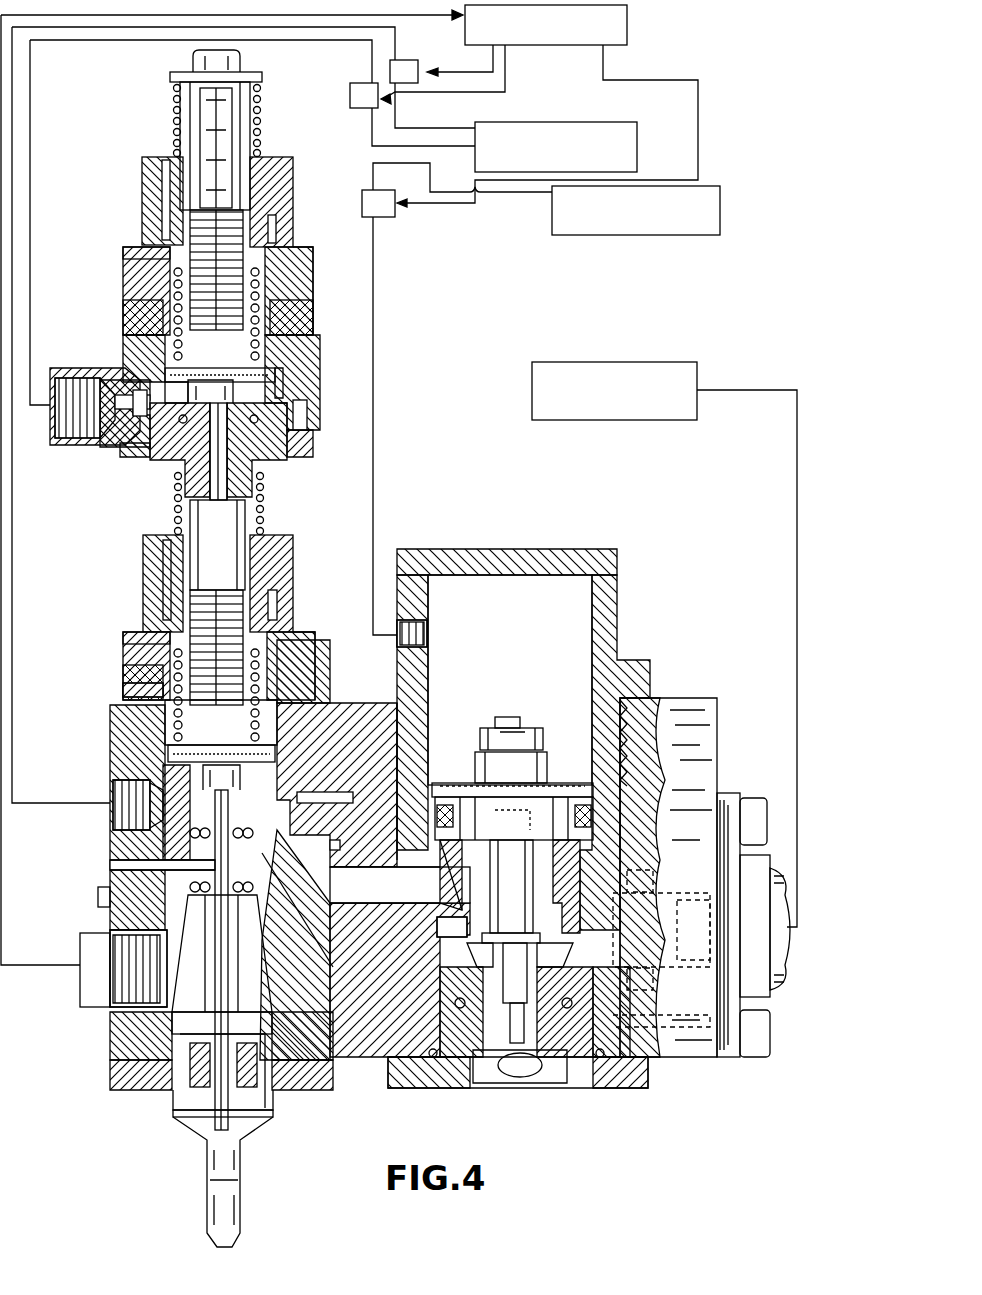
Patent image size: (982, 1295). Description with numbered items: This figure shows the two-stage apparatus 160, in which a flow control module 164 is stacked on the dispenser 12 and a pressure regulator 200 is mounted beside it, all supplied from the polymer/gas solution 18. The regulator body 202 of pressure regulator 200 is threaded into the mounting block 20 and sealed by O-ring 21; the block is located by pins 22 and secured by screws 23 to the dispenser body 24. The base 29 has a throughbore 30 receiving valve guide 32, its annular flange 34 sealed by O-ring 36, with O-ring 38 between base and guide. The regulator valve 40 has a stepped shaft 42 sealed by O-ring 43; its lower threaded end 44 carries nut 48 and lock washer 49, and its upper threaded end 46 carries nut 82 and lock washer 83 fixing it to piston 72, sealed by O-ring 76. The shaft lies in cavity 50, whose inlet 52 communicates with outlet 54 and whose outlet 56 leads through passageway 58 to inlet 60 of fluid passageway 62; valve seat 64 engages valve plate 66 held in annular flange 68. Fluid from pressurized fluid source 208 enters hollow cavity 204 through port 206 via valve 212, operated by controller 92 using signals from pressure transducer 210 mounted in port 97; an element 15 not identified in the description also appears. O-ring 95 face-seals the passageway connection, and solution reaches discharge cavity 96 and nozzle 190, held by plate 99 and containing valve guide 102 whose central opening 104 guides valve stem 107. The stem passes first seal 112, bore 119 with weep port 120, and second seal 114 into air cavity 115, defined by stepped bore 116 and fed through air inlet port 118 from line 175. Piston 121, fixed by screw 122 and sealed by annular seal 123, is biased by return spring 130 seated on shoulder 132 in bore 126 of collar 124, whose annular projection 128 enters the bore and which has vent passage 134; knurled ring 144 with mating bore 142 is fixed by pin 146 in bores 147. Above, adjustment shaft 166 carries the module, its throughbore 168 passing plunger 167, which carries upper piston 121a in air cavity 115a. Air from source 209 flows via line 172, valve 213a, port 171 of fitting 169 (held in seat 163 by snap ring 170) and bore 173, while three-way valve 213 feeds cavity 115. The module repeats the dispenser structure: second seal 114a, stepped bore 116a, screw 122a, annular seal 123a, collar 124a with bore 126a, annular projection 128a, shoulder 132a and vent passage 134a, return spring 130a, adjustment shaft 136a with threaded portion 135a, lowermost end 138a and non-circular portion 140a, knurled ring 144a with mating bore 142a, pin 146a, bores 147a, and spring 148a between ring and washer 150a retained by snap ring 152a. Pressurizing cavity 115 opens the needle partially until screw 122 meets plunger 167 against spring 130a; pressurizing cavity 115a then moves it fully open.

The dispenser 12 is at (70, 860).
The knob 15 is at (792, 1000).
The polymer/gas solution 18 is at (649, 360).
The mounting block 20 is at (685, 732).
The O-ring 21 is at (650, 806).
The pins 22 is at (346, 782).
The screws 23 is at (98, 897).
The dispenser body 24 is at (100, 750).
The base 29 is at (631, 1112).
The throughbore 30 is at (560, 1088).
The valve guide 32 is at (563, 1028).
The annular flange 34 is at (648, 1078).
The O-ring 36 is at (607, 1088).
The O-ring 38 is at (630, 994).
The regulator valve 40 is at (554, 902).
The stepped shaft 42 is at (497, 880).
The O-ring 43 is at (440, 1088).
The lower threaded end 44 is at (498, 1088).
The upper threaded end 46 is at (500, 716).
The nut 48 is at (538, 1084).
The lock washer 49 is at (480, 1084).
The cavity 50 is at (453, 920).
The inlet 52 is at (608, 937).
The outlet 54 is at (695, 930).
The outlet 56 is at (452, 880).
The passageway 58 is at (366, 856).
The inlet 60 is at (340, 886).
The fluid passageway 62 is at (310, 886).
The valve seat 64 is at (468, 958).
The valve plate 66 is at (458, 978).
The annular flange 68 is at (452, 1004).
The piston 72 is at (567, 776).
The O-ring 76 is at (466, 792).
The nut 82 is at (544, 726).
The lock washer 83 is at (480, 744).
The controller 92 is at (627, 25).
The O-ring 95 is at (345, 832).
The discharge cavity 96 is at (108, 916).
The internally threaded port 97 is at (130, 1028).
The plate 99 is at (114, 1092).
The valve guide 102 is at (176, 1094).
The central opening 104 is at (267, 1098).
The valve stem 107 is at (226, 1010).
The first seal 112 is at (240, 840).
The second seal 114 is at (241, 794).
The air cavity 115 is at (272, 774).
The stepped bore 116 is at (120, 720).
The air inlet port 118 is at (120, 790).
The bore 119 is at (238, 900).
The weep port 120 is at (120, 867).
The piston 121 is at (324, 702).
The screw 122 is at (303, 636).
The annular seal 123 is at (165, 756).
The collar 124 is at (115, 644).
The bore 126 is at (307, 604).
The annular projection 128 is at (310, 650).
The return spring 130 is at (174, 690).
The shoulder 132 is at (308, 562).
The vent passage 134 is at (125, 670).
The threaded portion 135a is at (134, 244).
The non-circular portion 140a is at (256, 122).
The mating bore 142 is at (180, 572).
The knurled ring 144 is at (143, 552).
The pin 146 is at (163, 542).
The bores 147 is at (144, 610).
The spring 148a is at (172, 99).
The apparatus 160 is at (455, 350).
The seat 163 is at (306, 384).
The flow control module 164 is at (373, 257).
The adjustment shaft 166 is at (270, 492).
The plunger 167 is at (215, 474).
The throughbore 168 is at (290, 464).
The fitting 169 is at (100, 448).
The snap ring 170 is at (305, 450).
The port 171 is at (50, 432).
The line 172 is at (30, 142).
The bore 173 is at (220, 458).
The line 175 is at (30, 810).
The nozzle 190 is at (183, 1194).
The pressure regulator 200 is at (648, 510).
The regulator body 202 is at (612, 640).
The hollow cavity 204 is at (529, 629).
The port 206 is at (425, 632).
The pressurized fluid source 208 is at (657, 236).
The source of pressurized air 209 is at (650, 112).
The pressure transducer 210 is at (98, 976).
The valve 212 is at (405, 218).
The three-way valve 213 is at (445, 48).
The valve 213a is at (382, 107).
The second seal 114a is at (236, 401).
The air cavity 115a is at (291, 398).
The stepped bore 116a is at (300, 350).
The upper piston 121a is at (270, 364).
The screw 122a is at (166, 358).
The annular seal 123a is at (245, 380).
The collar 124a is at (118, 270).
The bore 126a is at (280, 280).
The annular projection 128a is at (290, 324).
The return spring 130a is at (292, 252).
The shoulder 132a is at (210, 260).
The vent passage 134a is at (132, 306).
The adjustment shaft 136a is at (240, 184).
The lowermost end 138a is at (168, 330).
The mating bore 142a is at (256, 200).
The knurled ring 144a is at (142, 188).
The pin 146a is at (163, 160).
The bores 147a is at (276, 226).
The washer 150a is at (182, 78).
The snap ring 152a is at (242, 65).